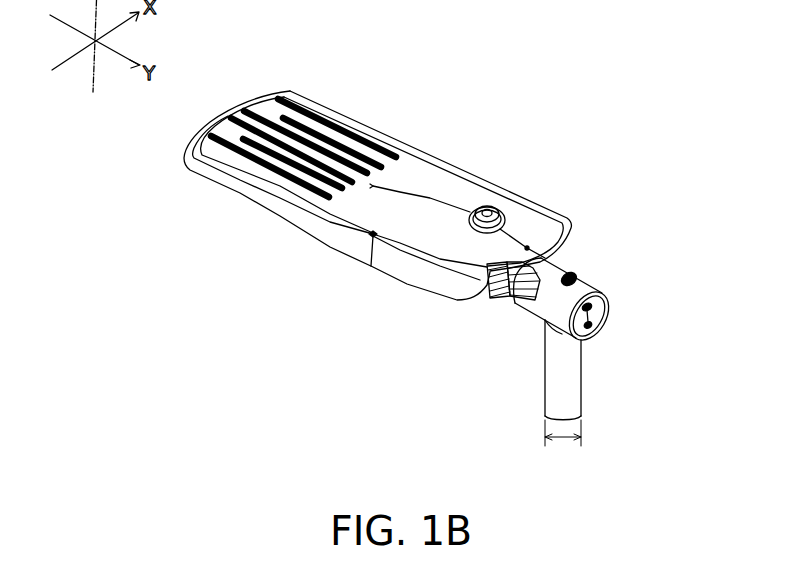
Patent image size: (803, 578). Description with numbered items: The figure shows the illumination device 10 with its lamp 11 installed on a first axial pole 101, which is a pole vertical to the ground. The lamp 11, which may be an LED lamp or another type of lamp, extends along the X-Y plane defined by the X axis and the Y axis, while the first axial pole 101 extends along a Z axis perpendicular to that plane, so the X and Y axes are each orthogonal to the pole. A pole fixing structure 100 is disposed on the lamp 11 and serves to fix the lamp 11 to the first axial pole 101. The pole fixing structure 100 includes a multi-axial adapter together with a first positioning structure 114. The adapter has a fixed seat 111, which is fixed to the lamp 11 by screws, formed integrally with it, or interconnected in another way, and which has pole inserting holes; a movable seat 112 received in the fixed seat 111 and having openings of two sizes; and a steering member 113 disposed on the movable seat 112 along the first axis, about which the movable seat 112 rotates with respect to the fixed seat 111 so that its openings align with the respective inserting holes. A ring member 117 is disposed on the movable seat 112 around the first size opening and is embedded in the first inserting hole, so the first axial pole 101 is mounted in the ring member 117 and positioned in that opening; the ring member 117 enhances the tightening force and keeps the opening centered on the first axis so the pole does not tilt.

The illumination device 10 is at (229, 52).
The lamp 11 is at (423, 172).
The pole fixing structure 100 is at (611, 254).
The first axial pole 101 is at (568, 391).
The fixed seat 111 is at (595, 292).
The movable seat 112 is at (604, 314).
The steering member 113 is at (573, 270).
The first positioning structure 114 is at (600, 333).
The ring member 117 is at (548, 329).